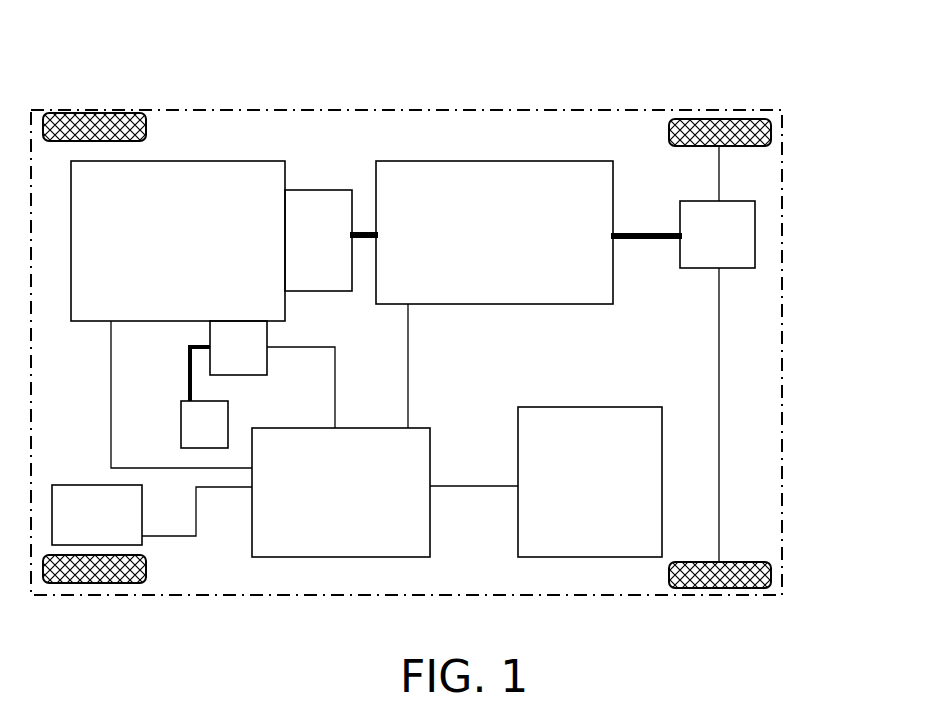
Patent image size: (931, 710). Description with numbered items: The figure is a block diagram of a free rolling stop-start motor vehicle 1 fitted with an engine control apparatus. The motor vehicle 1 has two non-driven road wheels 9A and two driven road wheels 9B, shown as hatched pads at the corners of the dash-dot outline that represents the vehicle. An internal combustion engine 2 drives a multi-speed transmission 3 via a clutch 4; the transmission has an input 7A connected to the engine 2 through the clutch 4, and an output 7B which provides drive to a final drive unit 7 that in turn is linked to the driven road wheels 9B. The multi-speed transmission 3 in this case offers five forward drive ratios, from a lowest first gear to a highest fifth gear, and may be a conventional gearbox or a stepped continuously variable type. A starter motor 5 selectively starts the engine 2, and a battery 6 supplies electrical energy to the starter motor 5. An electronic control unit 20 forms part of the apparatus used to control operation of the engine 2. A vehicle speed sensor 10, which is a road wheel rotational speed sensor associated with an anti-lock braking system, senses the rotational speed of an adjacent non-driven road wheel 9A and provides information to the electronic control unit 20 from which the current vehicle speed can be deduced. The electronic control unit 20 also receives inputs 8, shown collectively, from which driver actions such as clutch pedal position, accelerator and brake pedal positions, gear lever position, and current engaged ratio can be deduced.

The motor vehicle 1 is at (233, 110).
The internal combustion engine 2 is at (178, 241).
The multi-speed transmission 3 is at (494, 232).
The clutch 4 is at (318, 240).
The starter motor 5 is at (238, 348).
The battery 6 is at (204, 397).
The final drive unit 7 is at (717, 234).
The input 7A is at (367, 232).
The output 7B is at (641, 233).
The inputs 8 is at (590, 482).
The non-driven road wheels 9A is at (96, 113).
The driven road wheels 9B is at (718, 119).
The vehicle speed sensor 10 is at (97, 515).
The electronic control unit 20 is at (341, 492).